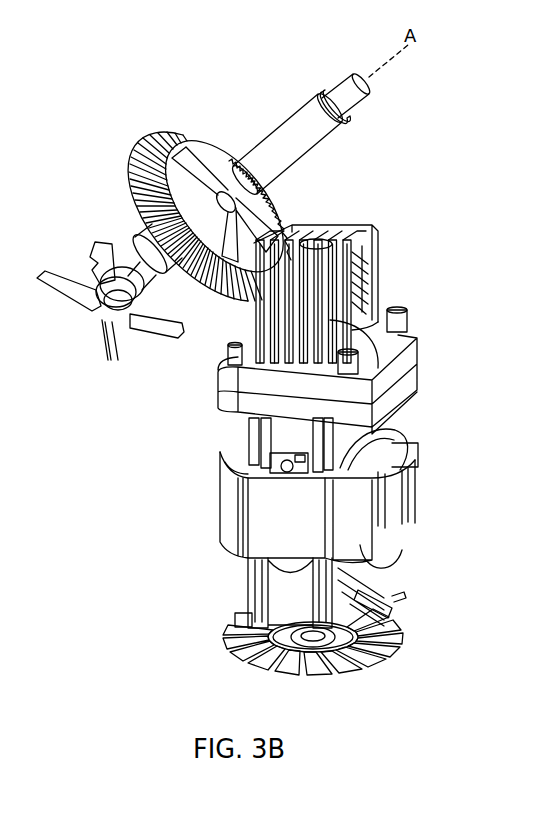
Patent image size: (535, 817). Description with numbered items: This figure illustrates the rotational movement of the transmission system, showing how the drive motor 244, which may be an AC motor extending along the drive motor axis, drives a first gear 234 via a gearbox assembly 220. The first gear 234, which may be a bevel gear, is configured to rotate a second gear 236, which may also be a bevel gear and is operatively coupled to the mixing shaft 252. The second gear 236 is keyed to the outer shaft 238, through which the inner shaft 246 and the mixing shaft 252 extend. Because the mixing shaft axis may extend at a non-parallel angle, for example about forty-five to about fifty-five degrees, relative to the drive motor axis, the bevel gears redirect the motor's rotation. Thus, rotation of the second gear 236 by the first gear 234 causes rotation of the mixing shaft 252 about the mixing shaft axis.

The gearbox assembly 220 is at (406, 348).
The first gear 234 is at (354, 288).
The second gear 236 is at (158, 138).
The outer shaft 238 is at (296, 121).
The drive motor 244 is at (372, 442).
The inner shaft 246 is at (358, 99).
The mixing shaft 252 is at (140, 268).